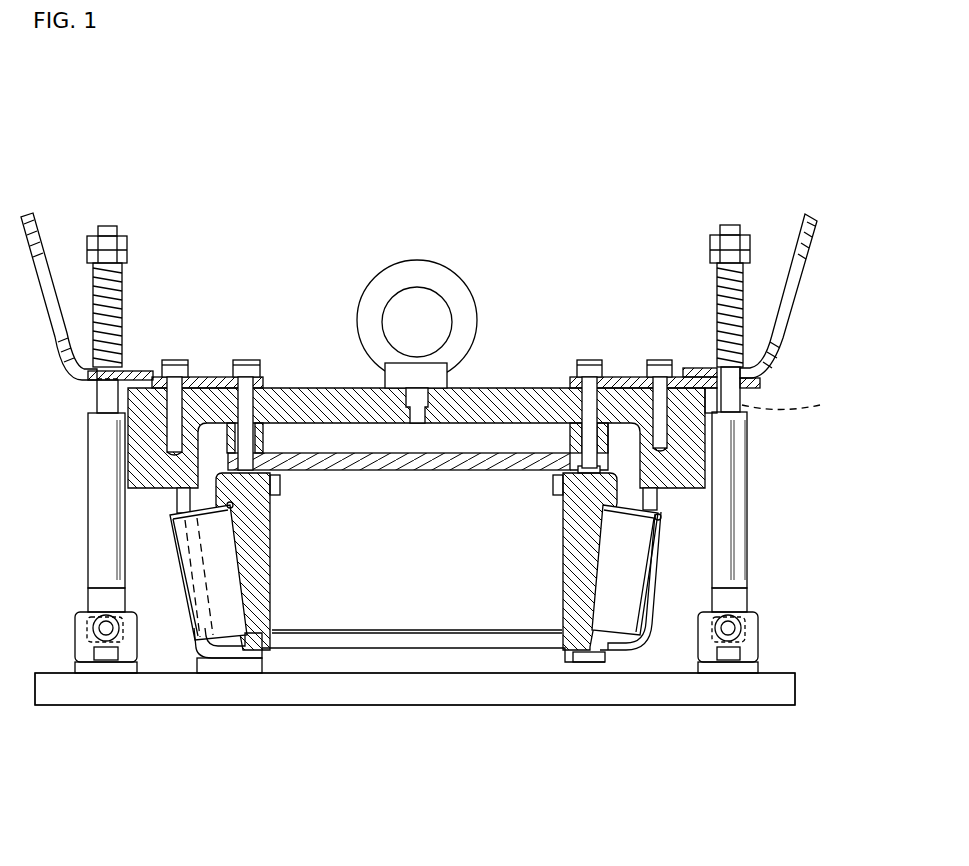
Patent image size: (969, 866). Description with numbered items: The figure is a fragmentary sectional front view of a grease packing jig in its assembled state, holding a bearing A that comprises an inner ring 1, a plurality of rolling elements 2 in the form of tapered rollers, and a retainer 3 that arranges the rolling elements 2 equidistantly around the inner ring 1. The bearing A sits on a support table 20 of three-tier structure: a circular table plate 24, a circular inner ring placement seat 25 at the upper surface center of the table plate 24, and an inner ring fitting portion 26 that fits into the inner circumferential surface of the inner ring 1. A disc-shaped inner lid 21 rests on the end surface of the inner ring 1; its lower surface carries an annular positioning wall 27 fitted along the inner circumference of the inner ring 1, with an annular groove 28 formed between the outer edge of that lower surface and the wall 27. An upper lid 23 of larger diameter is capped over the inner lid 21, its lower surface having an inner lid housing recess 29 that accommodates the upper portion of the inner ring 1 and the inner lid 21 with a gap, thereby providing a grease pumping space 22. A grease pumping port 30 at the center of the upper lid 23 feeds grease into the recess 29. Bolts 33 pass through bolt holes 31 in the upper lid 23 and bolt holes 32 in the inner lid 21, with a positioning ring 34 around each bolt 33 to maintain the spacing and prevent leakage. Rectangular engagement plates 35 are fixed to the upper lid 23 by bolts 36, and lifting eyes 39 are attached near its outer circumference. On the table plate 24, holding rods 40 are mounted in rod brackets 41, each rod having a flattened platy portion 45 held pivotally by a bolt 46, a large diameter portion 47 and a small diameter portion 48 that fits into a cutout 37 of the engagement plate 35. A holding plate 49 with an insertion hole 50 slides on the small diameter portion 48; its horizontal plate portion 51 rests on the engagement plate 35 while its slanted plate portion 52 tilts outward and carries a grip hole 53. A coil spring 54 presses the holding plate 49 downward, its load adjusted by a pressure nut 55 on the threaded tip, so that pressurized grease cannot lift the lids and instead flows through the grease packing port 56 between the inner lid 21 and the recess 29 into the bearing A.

The inner ring 1 is at (575, 557).
The rolling elements 2 is at (613, 618).
The retainer 3 is at (633, 617).
The support table 20 is at (318, 712).
The inner lid 21 is at (493, 460).
The grease pumping space 22 is at (293, 432).
The upper lid 23 is at (546, 388).
The table plate 24 is at (387, 693).
The inner ring placement seat 25 is at (436, 660).
The inner ring fitting portion 26 is at (477, 645).
The annular positioning wall 27 is at (277, 486).
The annular groove 28 is at (250, 500).
The inner lid housing recess 29 is at (200, 430).
The grease pumping port 30 is at (420, 410).
The bolt holes 31 is at (590, 398).
The bolt holes 32 is at (577, 477).
The bolts 33 is at (582, 362).
The positioning ring 34 is at (617, 428).
The engagement plate 35 is at (640, 377).
The bolts 36 is at (660, 362).
The cutout 37 is at (747, 383).
The lifting eyes 39 is at (417, 275).
The holding rod 40 is at (756, 460).
The rod bracket 41 is at (768, 643).
The platy portion 45 is at (735, 600).
The bolt 46 is at (730, 652).
The large diameter portion 47 is at (735, 498).
The small diameter portion 48 is at (745, 418).
The holding plate 49 is at (790, 354).
The insertion hole 50 is at (797, 402).
The horizontal plate portion 51 is at (693, 371).
The slanted plate portion 52 is at (813, 220).
The grip hole 53 is at (790, 283).
The coil spring 54 is at (715, 287).
The pressure nut 55 is at (733, 243).
The grease packing port 56 is at (661, 518).
The bearing A is at (660, 583).